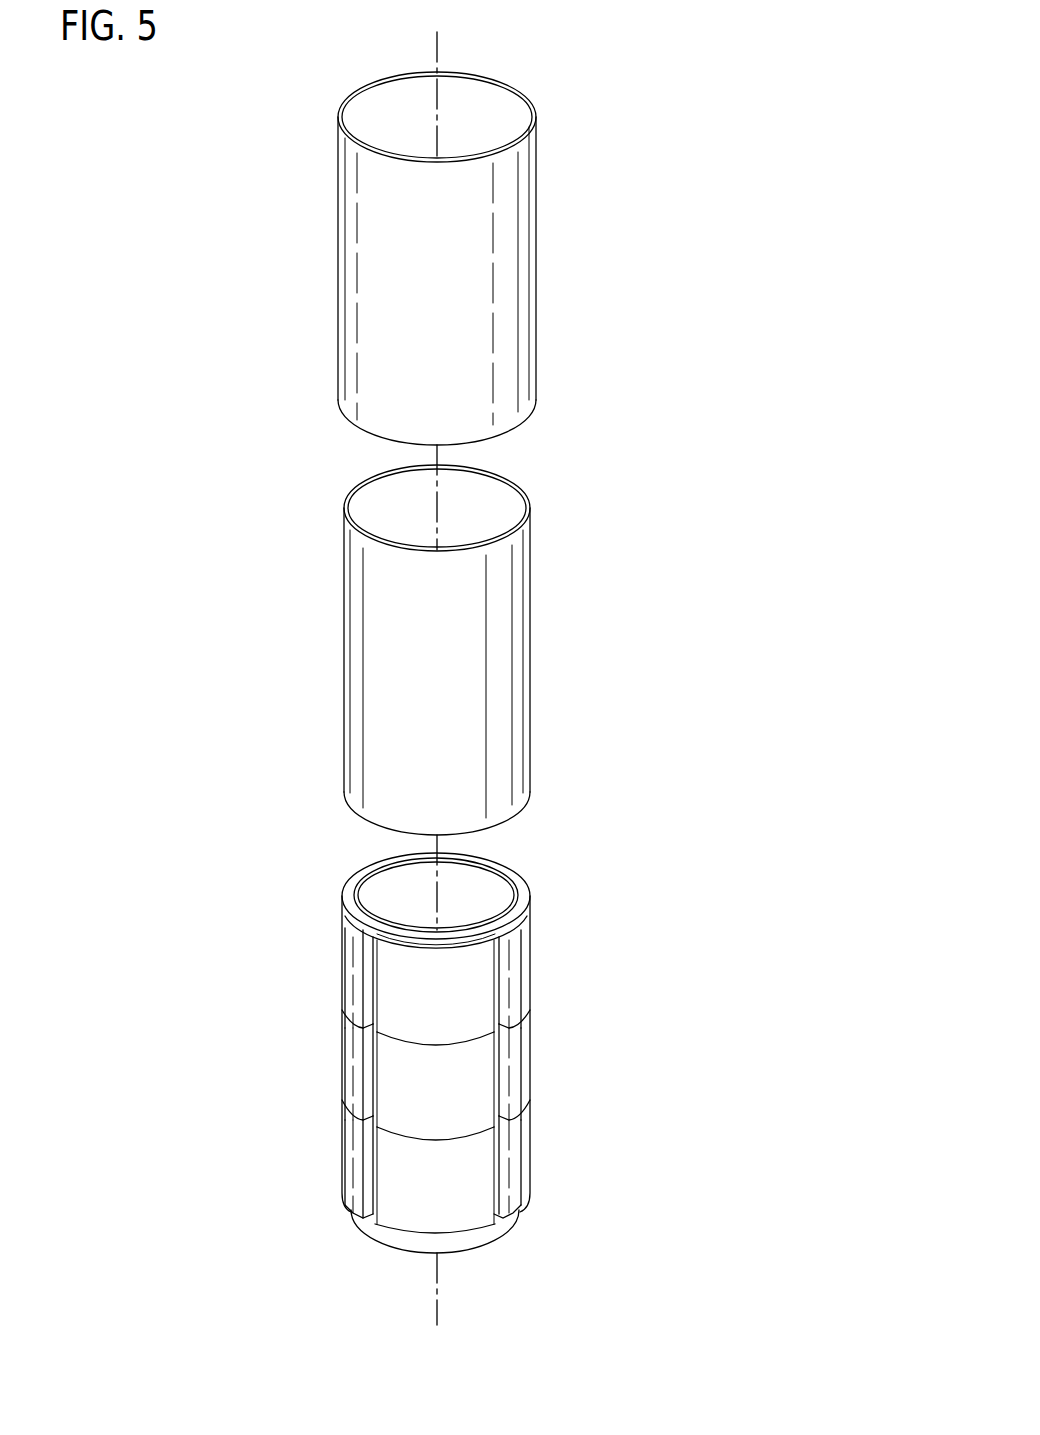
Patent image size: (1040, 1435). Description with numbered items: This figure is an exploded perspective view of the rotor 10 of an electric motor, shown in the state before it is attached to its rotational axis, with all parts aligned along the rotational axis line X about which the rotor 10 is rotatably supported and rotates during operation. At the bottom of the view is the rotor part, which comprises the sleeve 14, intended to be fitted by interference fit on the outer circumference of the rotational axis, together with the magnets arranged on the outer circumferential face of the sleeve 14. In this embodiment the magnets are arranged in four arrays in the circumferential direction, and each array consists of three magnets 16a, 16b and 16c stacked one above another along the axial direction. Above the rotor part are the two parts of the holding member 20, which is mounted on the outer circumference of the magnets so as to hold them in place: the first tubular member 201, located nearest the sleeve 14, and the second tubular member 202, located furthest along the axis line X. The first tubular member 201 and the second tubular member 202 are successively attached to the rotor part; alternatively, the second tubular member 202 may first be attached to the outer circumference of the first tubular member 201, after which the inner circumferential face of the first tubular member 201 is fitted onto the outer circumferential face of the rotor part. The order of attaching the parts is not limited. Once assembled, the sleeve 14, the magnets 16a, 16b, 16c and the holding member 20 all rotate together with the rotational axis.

The rotor 10 is at (252, 160).
The rotational axis line X is at (438, 42).
The holding member 20 is at (650, 275).
The second tubular member 202 is at (502, 330).
The first tubular member 201 is at (500, 588).
The sleeve 14 is at (502, 866).
The magnet 16a is at (350, 975).
The magnet 16b is at (348, 1067).
The magnet 16c is at (348, 1160).